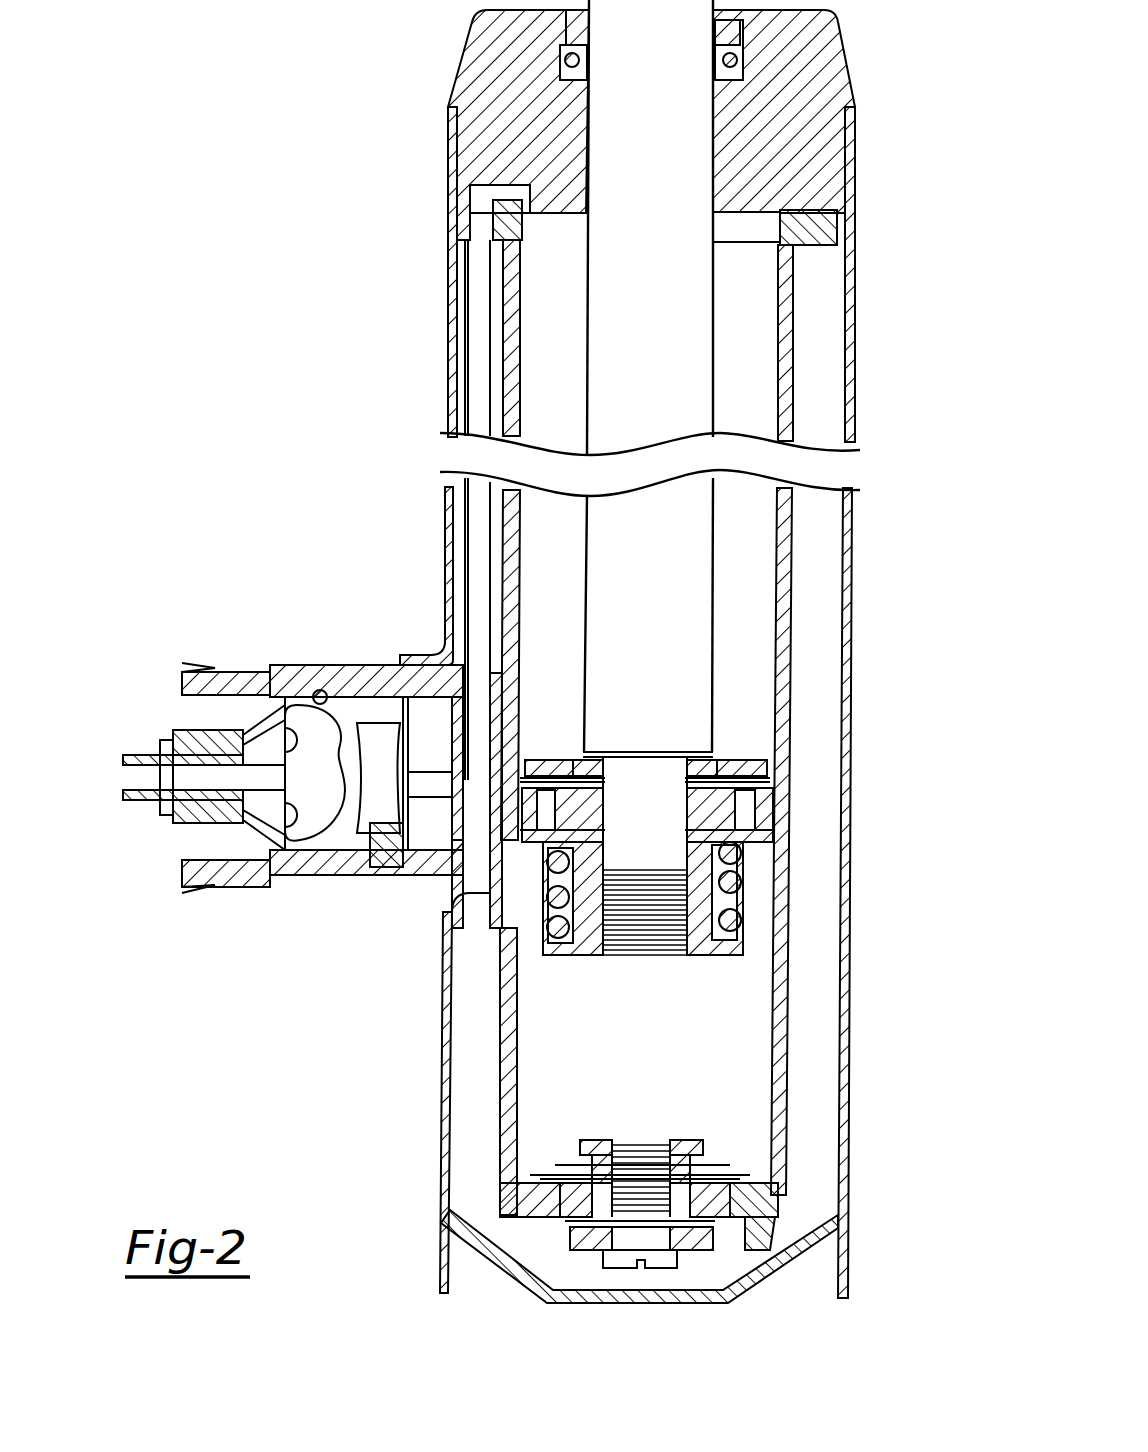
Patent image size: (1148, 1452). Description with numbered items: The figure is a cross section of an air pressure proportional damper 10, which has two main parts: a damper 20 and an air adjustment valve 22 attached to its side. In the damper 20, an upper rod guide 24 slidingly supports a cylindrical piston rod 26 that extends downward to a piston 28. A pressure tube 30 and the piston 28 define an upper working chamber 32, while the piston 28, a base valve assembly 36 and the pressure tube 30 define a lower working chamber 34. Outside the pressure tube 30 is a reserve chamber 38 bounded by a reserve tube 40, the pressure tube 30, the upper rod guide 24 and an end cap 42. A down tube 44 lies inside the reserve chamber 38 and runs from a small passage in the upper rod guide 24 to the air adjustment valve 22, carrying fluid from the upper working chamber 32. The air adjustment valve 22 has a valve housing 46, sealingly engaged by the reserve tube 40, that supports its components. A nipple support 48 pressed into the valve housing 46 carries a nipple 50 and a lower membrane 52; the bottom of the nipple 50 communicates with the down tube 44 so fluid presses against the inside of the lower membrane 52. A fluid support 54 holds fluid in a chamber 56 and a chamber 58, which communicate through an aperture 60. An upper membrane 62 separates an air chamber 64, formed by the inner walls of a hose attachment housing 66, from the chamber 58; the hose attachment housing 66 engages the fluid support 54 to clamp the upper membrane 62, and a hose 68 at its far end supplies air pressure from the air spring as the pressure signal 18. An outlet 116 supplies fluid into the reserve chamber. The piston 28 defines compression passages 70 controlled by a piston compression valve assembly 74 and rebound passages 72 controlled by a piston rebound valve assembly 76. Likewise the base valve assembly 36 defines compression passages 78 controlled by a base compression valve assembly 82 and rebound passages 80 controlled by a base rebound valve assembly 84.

The air pressure proportional damper 10 is at (182, 140).
The pressure signal 18 is at (130, 800).
The damper 20 is at (358, 315).
The air adjustment valve 22 is at (268, 728).
The upper rod guide 24 is at (508, 50).
The piston rod 26 is at (600, 272).
The piston 28 is at (722, 803).
The pressure tube 30 is at (790, 360).
The upper working chamber 32 is at (750, 285).
The lower working chamber 34 is at (750, 976).
The base valve assembly 36 is at (701, 1214).
The reserve chamber 38 is at (822, 585).
The reserve tube 40 is at (850, 518).
The end cap 42 is at (773, 1266).
The down tube 44 is at (490, 421).
The valve housing 46 is at (280, 690).
The nipple support 48 is at (400, 690).
The nipple 50 is at (440, 830).
The lower membrane 52 is at (388, 835).
The fluid support 54 is at (350, 690).
The chamber 56 is at (392, 768).
The chamber 58 is at (325, 802).
The aperture 60 is at (325, 690).
The upper membrane 62 is at (252, 705).
The air chamber 64 is at (273, 767).
The hose attachment housing 66 is at (190, 843).
The hose 68 is at (140, 755).
The compression passages 70 is at (540, 760).
The rebound passages 72 is at (728, 803).
The piston compression valve assembly 74 is at (730, 760).
The piston rebound valve assembly 76 is at (748, 880).
The compression passages 78 is at (697, 1195).
The rebound passages 80 is at (547, 1208).
The base compression valve assembly 82 is at (575, 1272).
The base rebound valve assembly 84 is at (566, 1148).
The outlet 116 is at (478, 930).